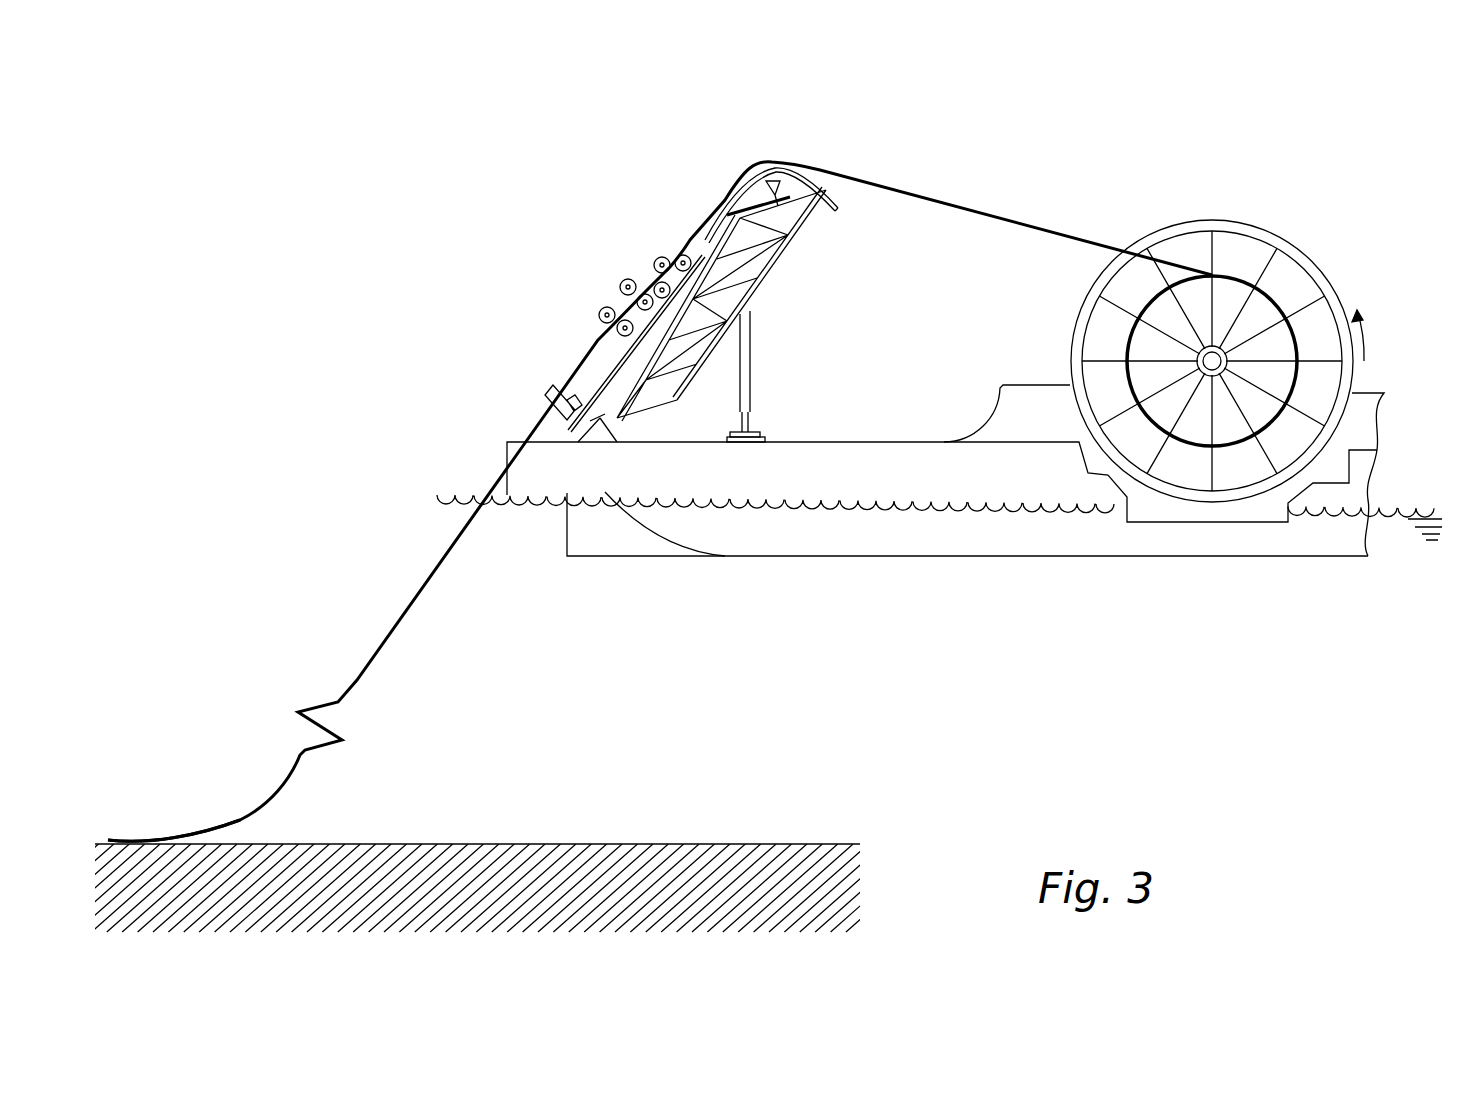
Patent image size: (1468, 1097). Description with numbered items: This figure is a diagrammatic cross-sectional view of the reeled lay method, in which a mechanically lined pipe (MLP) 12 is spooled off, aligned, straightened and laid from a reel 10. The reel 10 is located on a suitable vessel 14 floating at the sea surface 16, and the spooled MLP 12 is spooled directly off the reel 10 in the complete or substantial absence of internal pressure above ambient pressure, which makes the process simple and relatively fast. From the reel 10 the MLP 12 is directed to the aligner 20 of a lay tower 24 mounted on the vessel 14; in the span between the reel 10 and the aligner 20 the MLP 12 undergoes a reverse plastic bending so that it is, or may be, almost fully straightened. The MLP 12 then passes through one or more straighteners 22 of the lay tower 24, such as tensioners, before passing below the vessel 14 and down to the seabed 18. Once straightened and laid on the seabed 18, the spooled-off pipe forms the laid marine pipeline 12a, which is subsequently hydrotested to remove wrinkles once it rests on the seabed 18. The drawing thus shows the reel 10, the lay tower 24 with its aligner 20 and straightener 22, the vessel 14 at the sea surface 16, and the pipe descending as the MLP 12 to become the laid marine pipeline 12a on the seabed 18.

The reel 10 is at (1262, 226).
The mechanically lined pipe (MLP) 12 is at (967, 205).
The laid marine pipeline 12a is at (173, 840).
The vessel 14 is at (879, 442).
The sea surface 16 is at (428, 498).
The seabed 18 is at (512, 909).
The aligner 20 is at (760, 168).
The straightener 22 is at (659, 257).
The lay tower 24 is at (773, 270).